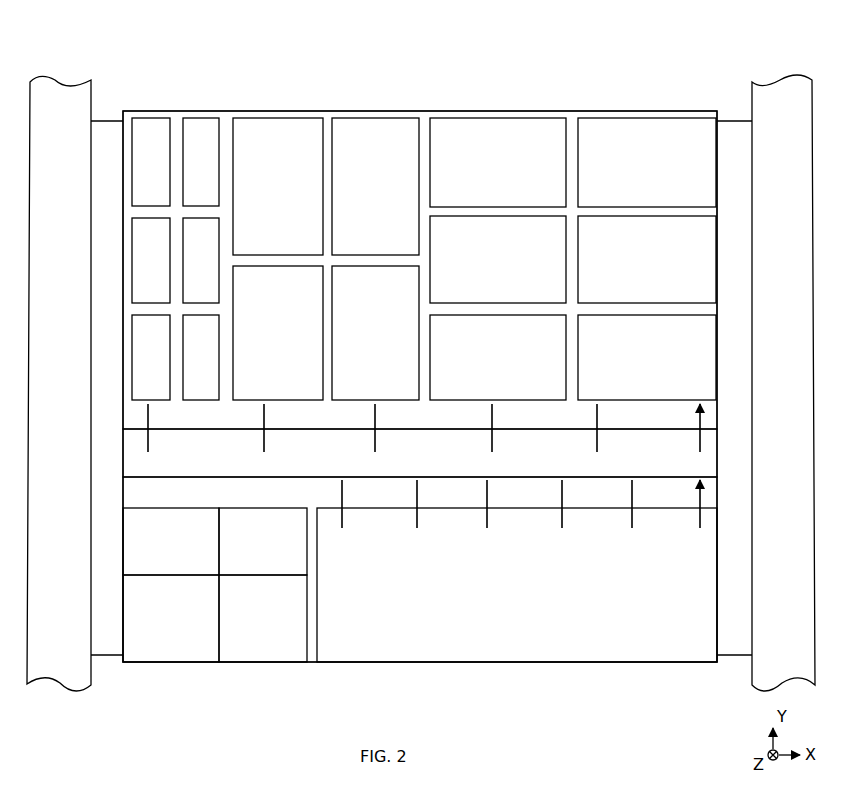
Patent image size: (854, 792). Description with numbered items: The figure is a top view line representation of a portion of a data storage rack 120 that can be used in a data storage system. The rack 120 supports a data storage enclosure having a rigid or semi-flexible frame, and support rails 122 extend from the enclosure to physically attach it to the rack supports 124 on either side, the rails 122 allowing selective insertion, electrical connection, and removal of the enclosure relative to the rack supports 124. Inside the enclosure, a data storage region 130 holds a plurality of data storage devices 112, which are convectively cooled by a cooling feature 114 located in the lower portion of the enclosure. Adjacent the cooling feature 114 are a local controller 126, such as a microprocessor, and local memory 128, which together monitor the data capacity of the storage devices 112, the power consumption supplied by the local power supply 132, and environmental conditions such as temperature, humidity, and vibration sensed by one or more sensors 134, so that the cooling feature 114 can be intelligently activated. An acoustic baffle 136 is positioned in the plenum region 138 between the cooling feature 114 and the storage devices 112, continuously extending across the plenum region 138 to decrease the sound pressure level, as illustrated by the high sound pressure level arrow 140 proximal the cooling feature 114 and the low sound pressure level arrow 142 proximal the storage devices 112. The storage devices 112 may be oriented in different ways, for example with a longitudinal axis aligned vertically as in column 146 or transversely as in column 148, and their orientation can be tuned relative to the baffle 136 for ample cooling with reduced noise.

The data storage rack 120 is at (757, 56).
The data storage devices 112 is at (132, 166).
The cooling feature 114 is at (531, 591).
The support rails 122 is at (108, 119).
The rack supports 124 is at (74, 392).
The local controller 126 is at (276, 627).
The local memory 128 is at (276, 551).
The data storage region 130 is at (720, 260).
The local power supply 132 is at (185, 627).
The sensors 134 is at (185, 551).
The acoustic baffle 136 is at (434, 461).
The plenum region 138 is at (720, 493).
The high sound pressure level arrow 140 is at (416, 520).
The low sound pressure level arrow 142 is at (640, 110).
The column 146 is at (184, 110).
The column 148 is at (370, 110).